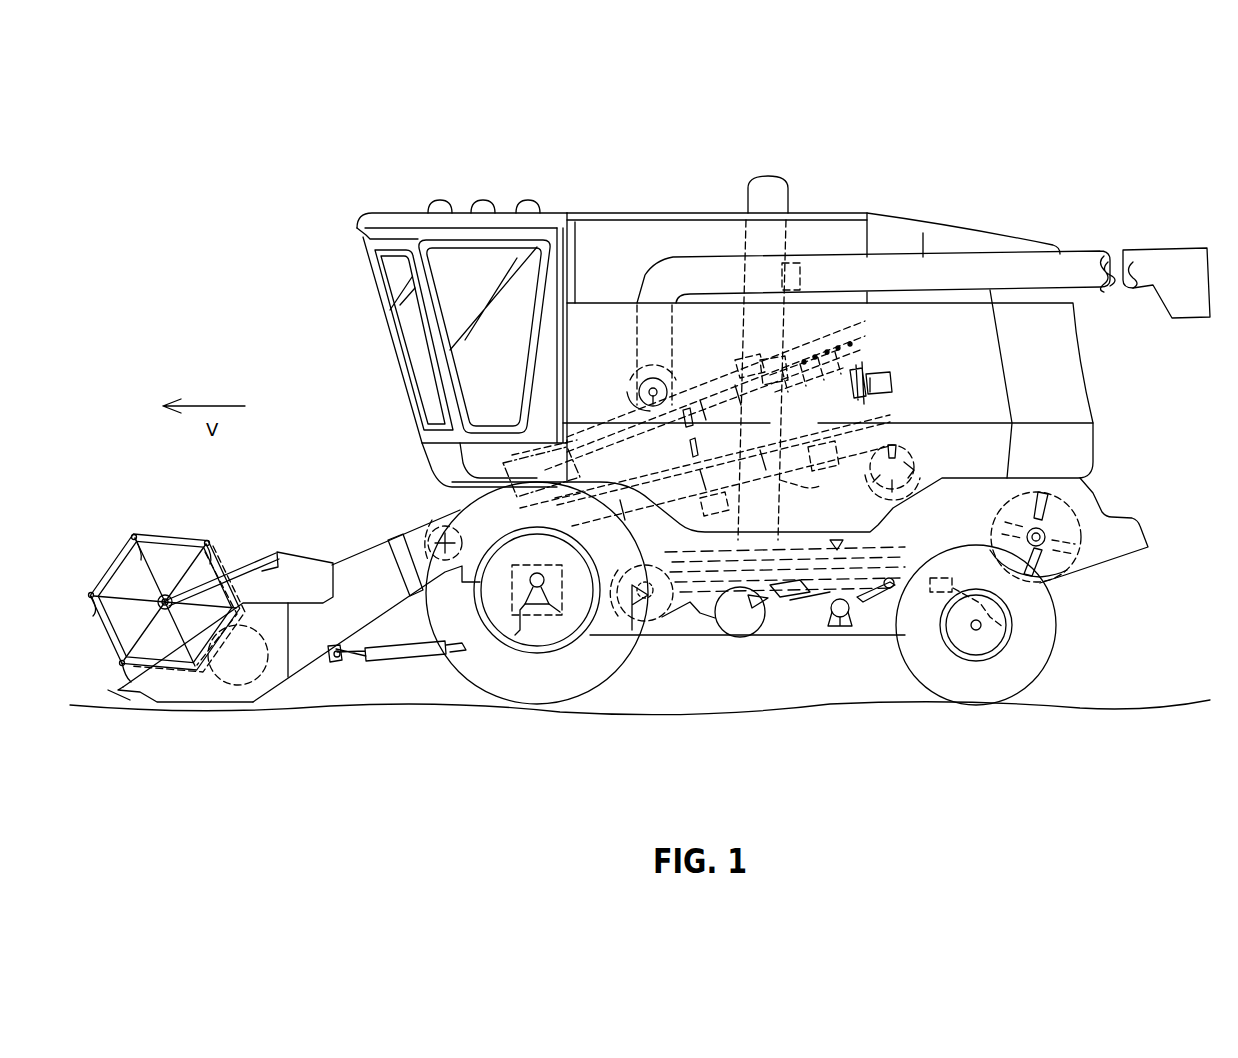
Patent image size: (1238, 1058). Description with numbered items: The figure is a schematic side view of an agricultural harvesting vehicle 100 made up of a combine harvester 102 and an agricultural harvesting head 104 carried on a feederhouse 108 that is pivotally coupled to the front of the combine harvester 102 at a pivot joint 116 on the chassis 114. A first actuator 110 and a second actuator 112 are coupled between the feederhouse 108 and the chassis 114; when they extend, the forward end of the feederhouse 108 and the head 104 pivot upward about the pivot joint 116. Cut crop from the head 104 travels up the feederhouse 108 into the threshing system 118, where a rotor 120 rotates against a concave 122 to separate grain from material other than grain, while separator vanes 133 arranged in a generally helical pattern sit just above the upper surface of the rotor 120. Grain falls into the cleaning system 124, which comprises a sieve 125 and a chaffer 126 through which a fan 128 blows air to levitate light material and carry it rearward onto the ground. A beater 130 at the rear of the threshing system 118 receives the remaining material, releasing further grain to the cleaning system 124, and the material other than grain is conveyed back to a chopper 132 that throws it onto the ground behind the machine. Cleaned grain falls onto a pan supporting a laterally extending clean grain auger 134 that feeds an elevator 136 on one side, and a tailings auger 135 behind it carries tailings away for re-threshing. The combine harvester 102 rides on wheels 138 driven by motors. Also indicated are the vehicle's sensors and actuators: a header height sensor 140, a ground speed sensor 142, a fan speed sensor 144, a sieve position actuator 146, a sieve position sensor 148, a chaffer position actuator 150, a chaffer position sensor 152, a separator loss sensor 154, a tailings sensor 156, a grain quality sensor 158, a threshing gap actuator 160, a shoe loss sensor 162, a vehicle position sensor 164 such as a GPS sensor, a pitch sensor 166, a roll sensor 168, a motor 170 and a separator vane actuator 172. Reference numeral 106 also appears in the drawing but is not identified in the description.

The agricultural harvesting vehicle 100 is at (731, 135).
The combine harvester 102 is at (815, 213).
The agricultural harvesting head 104 is at (186, 703).
The operator cab 106 is at (606, 213).
The feederhouse 108 is at (353, 552).
The first actuator 110 is at (397, 702).
The second actuator 112 is at (412, 648).
The chassis 114 is at (706, 637).
The pivot joint 116 is at (440, 530).
The threshing system 118 is at (838, 345).
The rotor 120 is at (856, 352).
The concave 122 is at (787, 493).
The cleaning system 124 is at (883, 655).
The sieve 125 is at (990, 550).
The chaffer 126 is at (813, 637).
The fan 128 is at (655, 640).
The beater 130 is at (905, 450).
The chopper 132 is at (1058, 576).
The separator vanes 133 is at (880, 378).
The clean grain auger 134 is at (745, 642).
The tailings auger 135 is at (855, 620).
The elevator 136 is at (745, 283).
The wheels 138 is at (656, 213).
The header height sensor 140 is at (625, 372).
The ground speed sensor 142 is at (923, 233).
The fan speed sensor 144 is at (648, 540).
The sieve position actuator 146 is at (807, 551).
The sieve position sensor 148 is at (840, 550).
The chaffer position actuator 150 is at (705, 583).
The chaffer position sensor 152 is at (800, 582).
The separator loss sensor 154 is at (705, 395).
The tailings sensor 156 is at (893, 652).
The grain quality sensor 158 is at (805, 275).
The threshing gap actuator 160 is at (717, 493).
The shoe loss sensor 162 is at (1003, 626).
The vehicle position sensor 164 is at (442, 200).
The pitch sensor 166 is at (488, 200).
The roll sensor 168 is at (533, 200).
The motor 170 is at (553, 615).
The separator vane actuator 172 is at (775, 355).